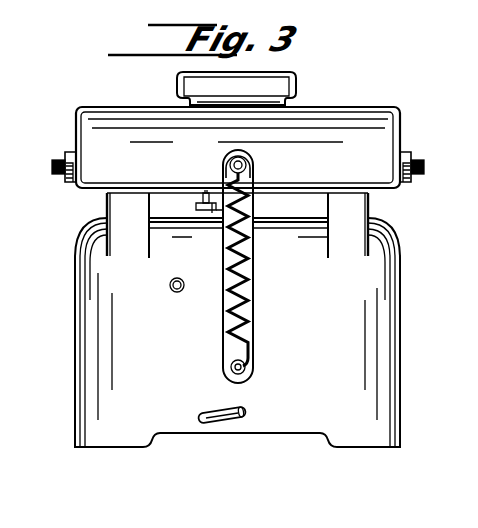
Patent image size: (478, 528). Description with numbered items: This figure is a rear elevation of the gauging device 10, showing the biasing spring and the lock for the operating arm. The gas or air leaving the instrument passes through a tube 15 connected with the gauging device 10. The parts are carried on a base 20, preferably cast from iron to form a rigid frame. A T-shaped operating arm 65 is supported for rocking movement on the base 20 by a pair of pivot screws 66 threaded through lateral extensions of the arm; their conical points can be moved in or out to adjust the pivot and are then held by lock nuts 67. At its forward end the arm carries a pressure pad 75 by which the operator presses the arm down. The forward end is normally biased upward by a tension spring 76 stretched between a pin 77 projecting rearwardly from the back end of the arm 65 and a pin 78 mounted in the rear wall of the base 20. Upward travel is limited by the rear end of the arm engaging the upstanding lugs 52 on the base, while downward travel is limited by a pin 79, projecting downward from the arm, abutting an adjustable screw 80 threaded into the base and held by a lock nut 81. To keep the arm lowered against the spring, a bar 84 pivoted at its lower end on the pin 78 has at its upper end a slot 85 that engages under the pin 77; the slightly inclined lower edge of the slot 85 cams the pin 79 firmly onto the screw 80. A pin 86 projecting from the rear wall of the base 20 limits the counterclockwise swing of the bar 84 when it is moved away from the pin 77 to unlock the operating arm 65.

The gauging device 10 is at (412, 267).
The tube 15 is at (213, 409).
The base 20 is at (396, 310).
The upstanding lugs 52 is at (369, 205).
The operating arm 65 is at (393, 115).
The pivot screws 66 is at (52, 167).
The lock nuts 67 is at (69, 153).
The pressure pad 75 is at (297, 71).
The tension spring 76 is at (254, 304).
The pin 77 is at (229, 161).
The pin 78 is at (248, 368).
The pin 79 is at (205, 190).
The adjustable screw 80 is at (196, 204).
The lock nut 81 is at (215, 214).
The bar 84 is at (251, 270).
The slot 85 is at (250, 173).
The pin 86 is at (169, 285).